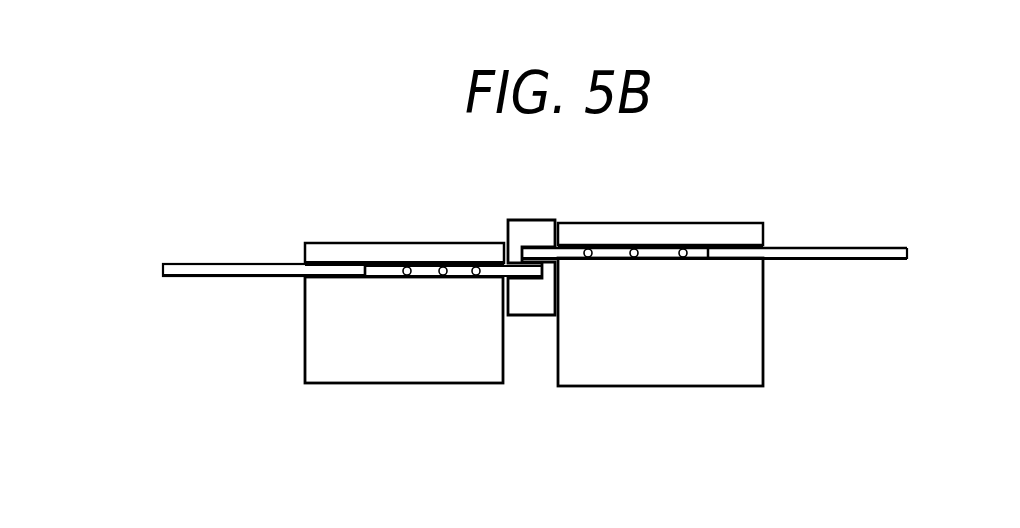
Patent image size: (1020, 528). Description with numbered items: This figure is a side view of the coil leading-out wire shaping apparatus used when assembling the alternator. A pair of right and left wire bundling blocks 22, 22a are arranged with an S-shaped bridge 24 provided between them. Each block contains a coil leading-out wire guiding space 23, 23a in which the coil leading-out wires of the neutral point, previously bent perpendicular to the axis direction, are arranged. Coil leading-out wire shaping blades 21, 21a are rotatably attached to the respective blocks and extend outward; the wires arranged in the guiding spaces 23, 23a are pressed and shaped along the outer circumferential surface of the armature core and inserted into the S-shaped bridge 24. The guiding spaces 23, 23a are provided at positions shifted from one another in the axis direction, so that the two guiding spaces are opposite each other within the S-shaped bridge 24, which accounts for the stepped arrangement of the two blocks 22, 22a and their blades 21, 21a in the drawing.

The coil leading-out wire shaping blade 21 is at (857, 248).
The coil leading-out wire shaping blade 21a is at (220, 263).
The wire bundling block 22 is at (762, 340).
The wire bundling block 22a is at (305, 333).
The coil leading-out wire guiding space 23 is at (665, 252).
The coil leading-out wire guiding space 23a is at (386, 277).
The S-shaped bridge 24 is at (527, 228).